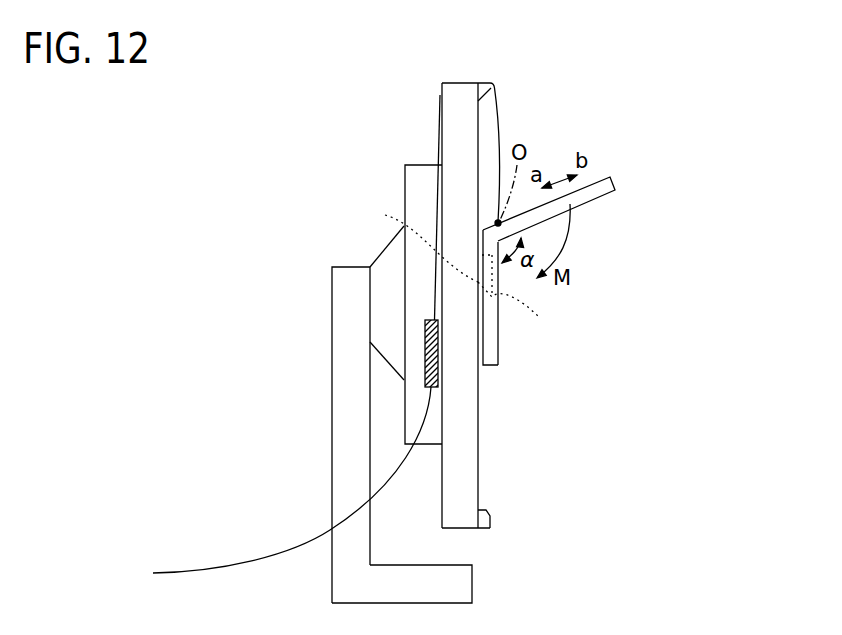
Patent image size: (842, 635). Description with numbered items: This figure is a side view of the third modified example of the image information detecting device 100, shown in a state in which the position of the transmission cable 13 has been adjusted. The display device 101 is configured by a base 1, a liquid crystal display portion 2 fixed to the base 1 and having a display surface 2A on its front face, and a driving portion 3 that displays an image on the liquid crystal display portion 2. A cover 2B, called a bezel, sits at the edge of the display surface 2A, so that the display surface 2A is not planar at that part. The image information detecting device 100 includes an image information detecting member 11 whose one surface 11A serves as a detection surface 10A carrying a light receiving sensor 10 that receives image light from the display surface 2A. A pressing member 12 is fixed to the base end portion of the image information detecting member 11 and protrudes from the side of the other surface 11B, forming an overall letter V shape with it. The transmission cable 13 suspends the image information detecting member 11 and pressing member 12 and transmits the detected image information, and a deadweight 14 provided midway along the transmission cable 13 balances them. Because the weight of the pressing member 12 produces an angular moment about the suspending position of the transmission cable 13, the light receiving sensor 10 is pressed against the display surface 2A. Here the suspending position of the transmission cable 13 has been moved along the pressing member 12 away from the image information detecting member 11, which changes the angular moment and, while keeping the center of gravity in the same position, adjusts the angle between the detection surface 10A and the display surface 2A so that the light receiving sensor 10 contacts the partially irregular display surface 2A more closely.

The base 1 is at (473, 578).
The liquid crystal display portion 2 is at (469, 487).
The display surface 2A is at (479, 462).
The cover 2B is at (483, 101).
The driving portion 3 is at (404, 175).
The light receiving sensor 10 is at (524, 295).
The detection surface 10A is at (409, 242).
The image information detecting member 11 is at (499, 348).
The one surface 11A is at (483, 340).
The other surface 11B is at (499, 320).
The pressing member 12 is at (614, 179).
The transmission cable 13 is at (500, 124).
The deadweight 14 is at (427, 367).
The image information detecting device 100 is at (606, 160).
The display device 101 is at (324, 320).